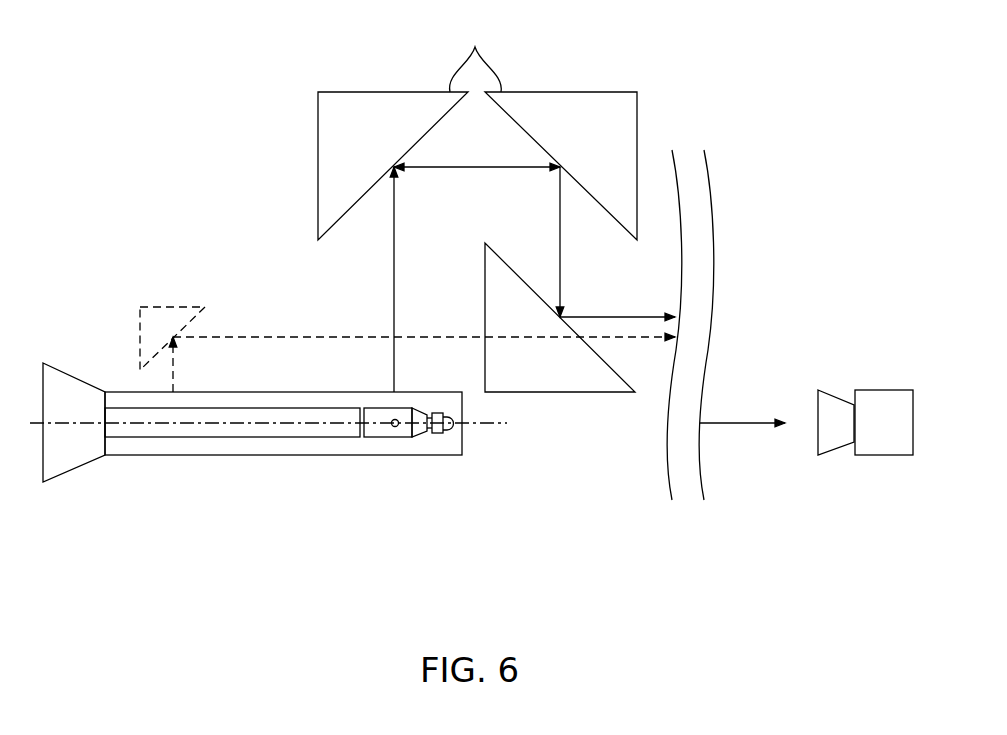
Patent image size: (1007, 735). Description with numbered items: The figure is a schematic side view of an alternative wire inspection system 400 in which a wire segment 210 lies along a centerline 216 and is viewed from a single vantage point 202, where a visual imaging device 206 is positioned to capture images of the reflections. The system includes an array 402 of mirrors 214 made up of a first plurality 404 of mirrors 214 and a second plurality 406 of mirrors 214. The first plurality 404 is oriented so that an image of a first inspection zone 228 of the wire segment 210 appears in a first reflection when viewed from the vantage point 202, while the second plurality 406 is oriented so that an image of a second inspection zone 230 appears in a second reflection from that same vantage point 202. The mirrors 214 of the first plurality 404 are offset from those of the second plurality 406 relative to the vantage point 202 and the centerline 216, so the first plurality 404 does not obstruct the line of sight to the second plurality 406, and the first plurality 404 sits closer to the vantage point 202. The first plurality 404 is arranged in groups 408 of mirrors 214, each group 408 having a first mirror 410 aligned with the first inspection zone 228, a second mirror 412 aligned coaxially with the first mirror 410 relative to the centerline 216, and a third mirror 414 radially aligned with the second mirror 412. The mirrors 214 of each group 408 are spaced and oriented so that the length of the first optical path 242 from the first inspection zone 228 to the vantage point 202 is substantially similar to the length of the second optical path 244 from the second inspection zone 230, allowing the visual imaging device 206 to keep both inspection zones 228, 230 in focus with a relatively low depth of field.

The wire inspection system 400 is at (737, 100).
The array 402 is at (190, 117).
The first plurality 404 is at (553, 52).
The second plurality 406 is at (222, 255).
The group 408 is at (670, 53).
The first mirror 410 is at (338, 92).
The second mirror 412 is at (582, 92).
The third mirror 414 is at (485, 316).
The mirror 214 is at (173, 307).
The first optical path 242 is at (394, 208).
The second optical path 244 is at (268, 337).
The wire segment 210 is at (257, 408).
The centerline 216 is at (487, 425).
The first inspection zone 228 is at (392, 443).
The second inspection zone 230 is at (170, 443).
The vantage point 202 is at (870, 360).
The visual imaging device 206 is at (883, 455).